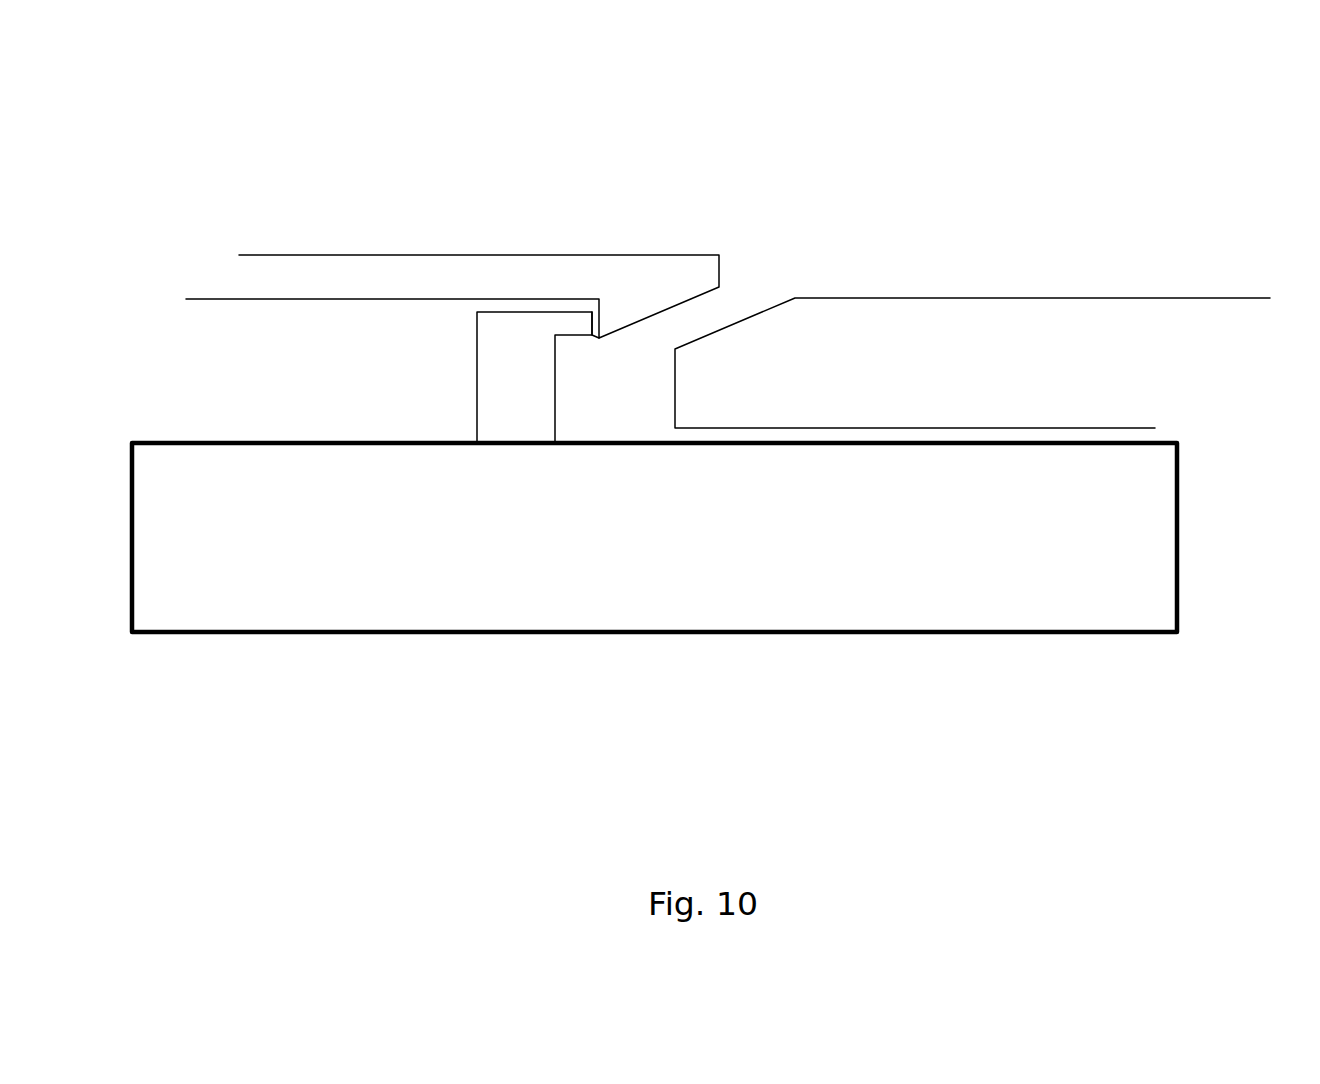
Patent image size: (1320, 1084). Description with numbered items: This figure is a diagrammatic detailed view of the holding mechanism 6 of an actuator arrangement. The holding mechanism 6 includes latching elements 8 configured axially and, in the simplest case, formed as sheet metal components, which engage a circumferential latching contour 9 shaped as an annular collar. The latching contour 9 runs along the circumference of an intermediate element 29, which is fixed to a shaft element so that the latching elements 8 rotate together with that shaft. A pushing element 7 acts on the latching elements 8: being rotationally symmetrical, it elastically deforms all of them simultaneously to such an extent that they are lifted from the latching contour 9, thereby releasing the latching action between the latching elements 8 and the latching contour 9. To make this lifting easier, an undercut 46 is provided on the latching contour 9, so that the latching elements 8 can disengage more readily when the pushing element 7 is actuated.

The holding mechanism 6 is at (302, 198).
The pushing element 7 is at (900, 360).
The latching element 8 is at (465, 272).
The latching contour 9 is at (523, 383).
The undercut 46 is at (583, 335).
The intermediate element 29 is at (453, 505).